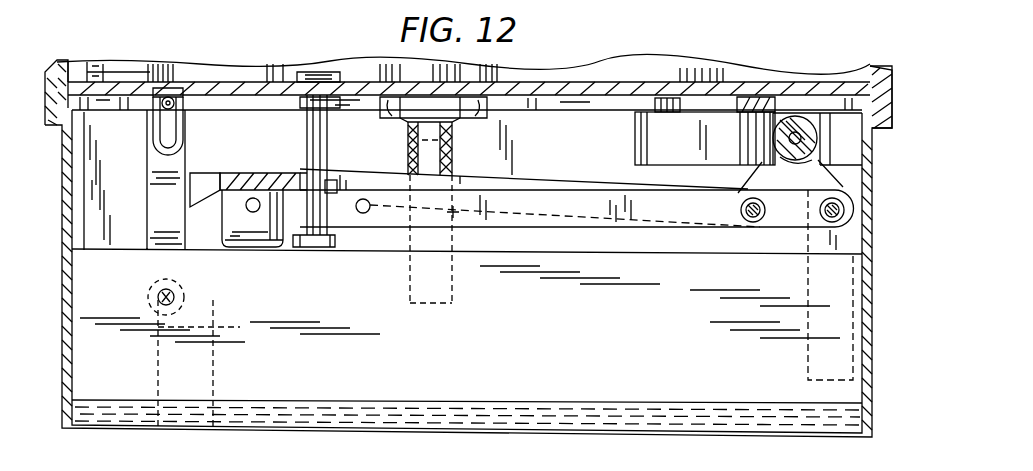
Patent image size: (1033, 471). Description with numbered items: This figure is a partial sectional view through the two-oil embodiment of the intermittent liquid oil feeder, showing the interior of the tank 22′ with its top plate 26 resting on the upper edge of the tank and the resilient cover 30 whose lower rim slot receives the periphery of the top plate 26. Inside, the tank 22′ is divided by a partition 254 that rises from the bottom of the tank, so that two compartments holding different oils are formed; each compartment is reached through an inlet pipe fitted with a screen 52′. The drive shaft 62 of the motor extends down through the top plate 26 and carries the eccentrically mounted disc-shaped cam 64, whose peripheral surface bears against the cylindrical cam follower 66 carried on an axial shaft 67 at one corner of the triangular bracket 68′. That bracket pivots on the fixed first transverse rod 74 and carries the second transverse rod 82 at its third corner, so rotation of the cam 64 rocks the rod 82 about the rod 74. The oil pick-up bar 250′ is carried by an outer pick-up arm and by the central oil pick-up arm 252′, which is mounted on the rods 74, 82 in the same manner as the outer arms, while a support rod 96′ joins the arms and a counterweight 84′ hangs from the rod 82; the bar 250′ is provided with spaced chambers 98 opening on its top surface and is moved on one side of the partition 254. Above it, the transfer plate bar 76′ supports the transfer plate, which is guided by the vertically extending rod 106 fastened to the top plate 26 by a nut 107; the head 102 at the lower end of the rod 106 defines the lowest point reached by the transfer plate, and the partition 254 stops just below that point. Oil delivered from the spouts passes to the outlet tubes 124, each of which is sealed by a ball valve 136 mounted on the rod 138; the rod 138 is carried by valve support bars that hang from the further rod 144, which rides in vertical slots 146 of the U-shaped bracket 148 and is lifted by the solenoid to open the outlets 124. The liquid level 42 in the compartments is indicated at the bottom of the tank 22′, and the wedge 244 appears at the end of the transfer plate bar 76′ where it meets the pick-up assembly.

The tank 22′ is at (62, 232).
The top plate 26 is at (684, 84).
The cover 30 is at (882, 72).
The liquid 42 is at (628, 408).
The screen 52′ is at (454, 152).
The drive shaft 62 is at (658, 102).
The disc-shaped cam 64 is at (712, 156).
The cam follower 66 is at (824, 124).
The axial shaft 67 is at (795, 132).
The triangular bracket 68′ is at (813, 167).
The first transverse rod 74 is at (745, 222).
The transfer plate bar 76′ is at (598, 182).
The second transverse rod 82 is at (822, 218).
The counterweight 84′ is at (806, 378).
The support rod 96′ is at (363, 214).
The chamber 98 is at (240, 250).
The head 102 is at (335, 248).
The rod 106 is at (322, 143).
The nut 107 is at (350, 84).
The outlet tube 124 is at (217, 330).
The ball valve 136 is at (186, 302).
The rod 138 is at (148, 294).
The further rod 144 is at (152, 118).
The slot 146 is at (178, 128).
The U-shaped bracket 148 is at (152, 148).
The wedge 244 is at (274, 173).
The oil pick-up bar 250′ is at (287, 248).
The central oil pick-up arm 252′ is at (608, 234).
The partition 254 is at (121, 255).